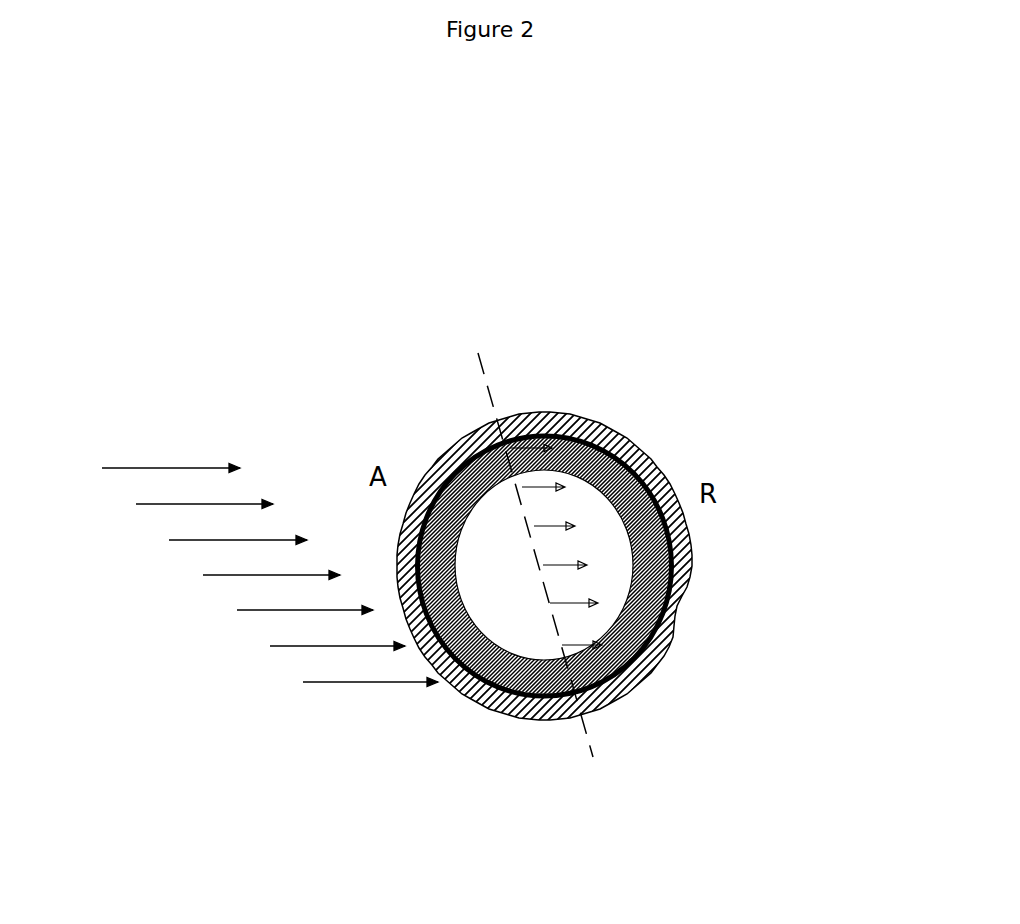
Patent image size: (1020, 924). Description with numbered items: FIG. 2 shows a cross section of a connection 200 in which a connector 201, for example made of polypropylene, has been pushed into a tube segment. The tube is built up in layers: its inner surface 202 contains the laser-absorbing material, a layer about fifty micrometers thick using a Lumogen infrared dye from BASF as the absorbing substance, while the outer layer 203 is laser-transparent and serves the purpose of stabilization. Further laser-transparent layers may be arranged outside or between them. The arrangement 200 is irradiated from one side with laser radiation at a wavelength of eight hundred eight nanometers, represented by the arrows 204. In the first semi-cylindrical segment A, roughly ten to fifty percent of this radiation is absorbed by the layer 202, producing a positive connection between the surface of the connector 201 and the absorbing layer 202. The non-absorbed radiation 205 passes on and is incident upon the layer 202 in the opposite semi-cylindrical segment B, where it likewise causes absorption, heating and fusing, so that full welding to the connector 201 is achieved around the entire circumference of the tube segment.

The connection 200 is at (569, 503).
The connector 201 is at (592, 428).
The inner surface of the tube 202 is at (557, 416).
The outer layer 203 is at (512, 412).
The laser radiation 204 is at (183, 446).
The non-absorbed radiation 205 is at (615, 690).